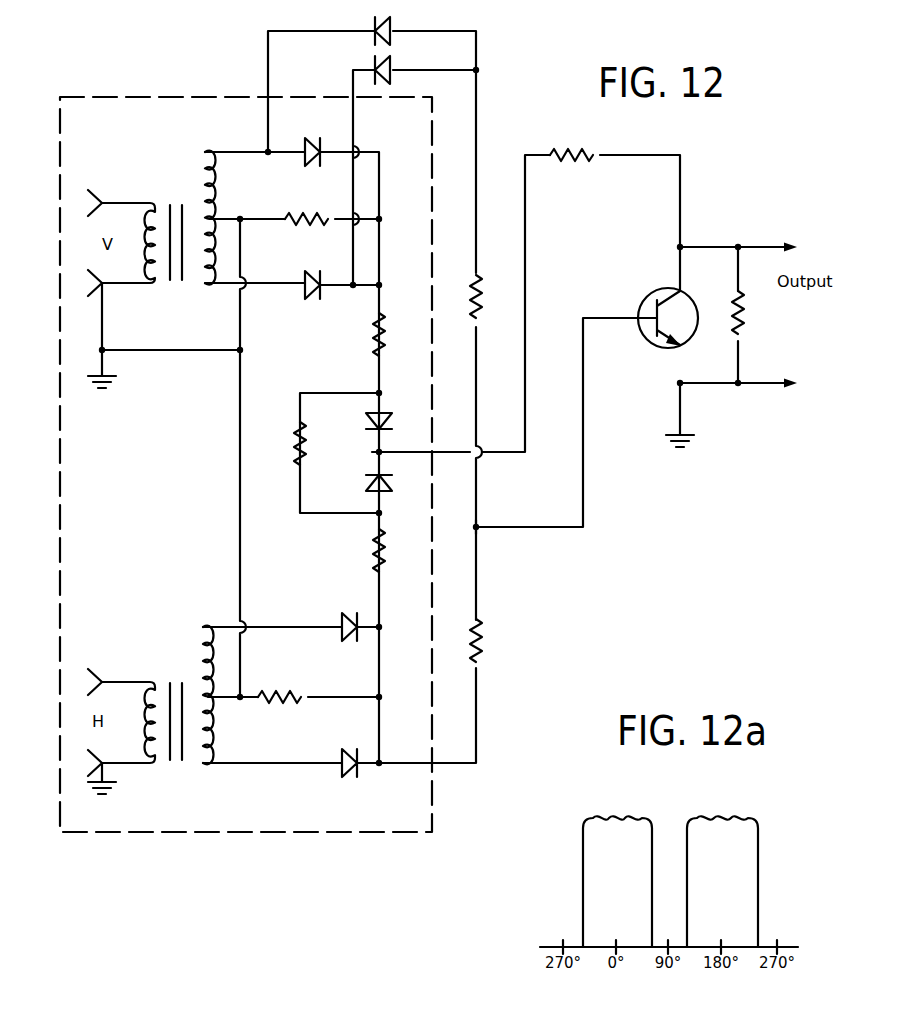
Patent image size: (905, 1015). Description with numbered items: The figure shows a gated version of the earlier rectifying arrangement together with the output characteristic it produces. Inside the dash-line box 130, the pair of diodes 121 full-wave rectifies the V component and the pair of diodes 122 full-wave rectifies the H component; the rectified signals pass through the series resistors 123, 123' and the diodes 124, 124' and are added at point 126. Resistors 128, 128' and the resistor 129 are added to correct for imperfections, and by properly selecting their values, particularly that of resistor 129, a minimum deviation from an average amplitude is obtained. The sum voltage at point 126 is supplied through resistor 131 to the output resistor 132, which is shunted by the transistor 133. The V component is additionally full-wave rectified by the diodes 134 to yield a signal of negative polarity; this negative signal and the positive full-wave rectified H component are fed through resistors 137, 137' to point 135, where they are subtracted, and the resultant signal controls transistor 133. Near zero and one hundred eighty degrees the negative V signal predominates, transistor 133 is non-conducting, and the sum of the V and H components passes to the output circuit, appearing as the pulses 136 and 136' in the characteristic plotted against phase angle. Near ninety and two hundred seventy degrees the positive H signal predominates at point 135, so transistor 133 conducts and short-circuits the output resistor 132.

In FIG. 12, the dash-line box 130 is at (190, 95).
In FIG. 12, the diodes 134 is at (384, 48).
In FIG. 12, the pair of diodes 121 is at (322, 118).
In FIG. 12, the resistor 128 is at (306, 201).
In FIG. 12, the series resistor 123 is at (351, 334).
In FIG. 12, the diode 124 is at (352, 414).
In FIG. 12, the resistor 129 is at (298, 454).
In FIG. 12, the point 126 is at (380, 452).
In FIG. 12, the diode 124' is at (351, 484).
In FIG. 12, the series resistor 123' is at (348, 550).
In FIG. 12, the pair of diodes 122 is at (350, 614).
In FIG. 12, the resistor 128' is at (283, 676).
In FIG. 12, the resistor 137 is at (492, 282).
In FIG. 12, the resistor 131 is at (576, 163).
In FIG. 12, the transistor 133 is at (646, 298).
In FIG. 12, the output resistor 132 is at (744, 313).
In FIG. 12, the point 135 is at (477, 528).
In FIG. 12, the resistor 137' is at (508, 640).
In FIG. 12A, the output signal pulse 136 is at (617, 861).
In FIG. 12A, the output signal pulse 136' is at (722, 861).